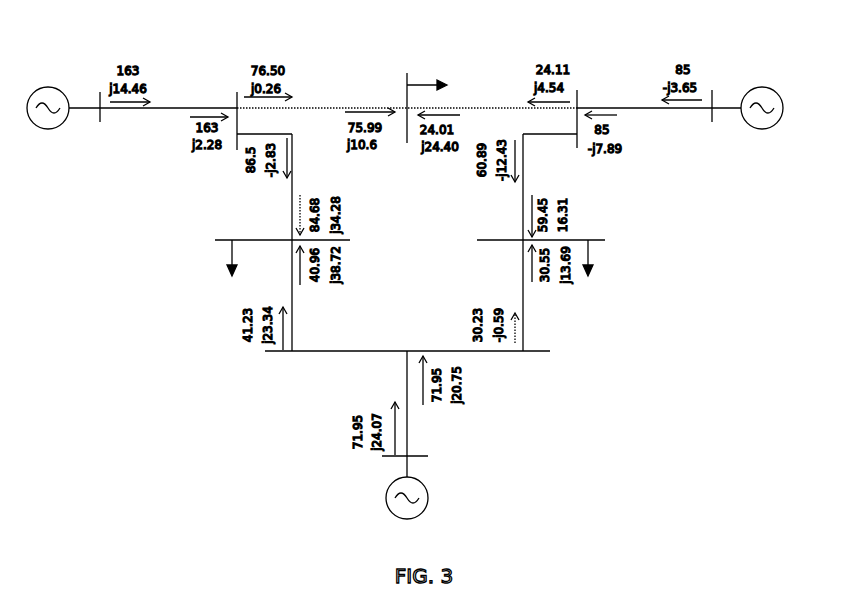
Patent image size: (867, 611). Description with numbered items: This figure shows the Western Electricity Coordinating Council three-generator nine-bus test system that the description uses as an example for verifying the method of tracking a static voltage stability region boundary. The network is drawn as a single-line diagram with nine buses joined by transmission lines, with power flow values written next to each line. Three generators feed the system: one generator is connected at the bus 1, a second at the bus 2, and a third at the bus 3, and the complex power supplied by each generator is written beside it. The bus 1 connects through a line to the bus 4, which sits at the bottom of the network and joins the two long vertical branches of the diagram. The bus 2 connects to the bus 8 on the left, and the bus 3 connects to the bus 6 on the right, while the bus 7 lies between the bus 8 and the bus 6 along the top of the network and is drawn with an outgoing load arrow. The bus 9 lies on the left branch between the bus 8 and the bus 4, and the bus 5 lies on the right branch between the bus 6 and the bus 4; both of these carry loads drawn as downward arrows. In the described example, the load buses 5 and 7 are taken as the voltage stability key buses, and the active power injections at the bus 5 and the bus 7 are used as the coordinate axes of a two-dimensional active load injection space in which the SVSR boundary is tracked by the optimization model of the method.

The bus 1 is at (450, 435).
The bus 2 is at (77, 109).
The bus 3 is at (751, 110).
The bus 4 is at (407, 365).
The load bus 5 is at (547, 262).
The bus 6 is at (556, 112).
The load bus 7 is at (421, 103).
The bus 8 is at (259, 113).
The bus 9 is at (275, 256).